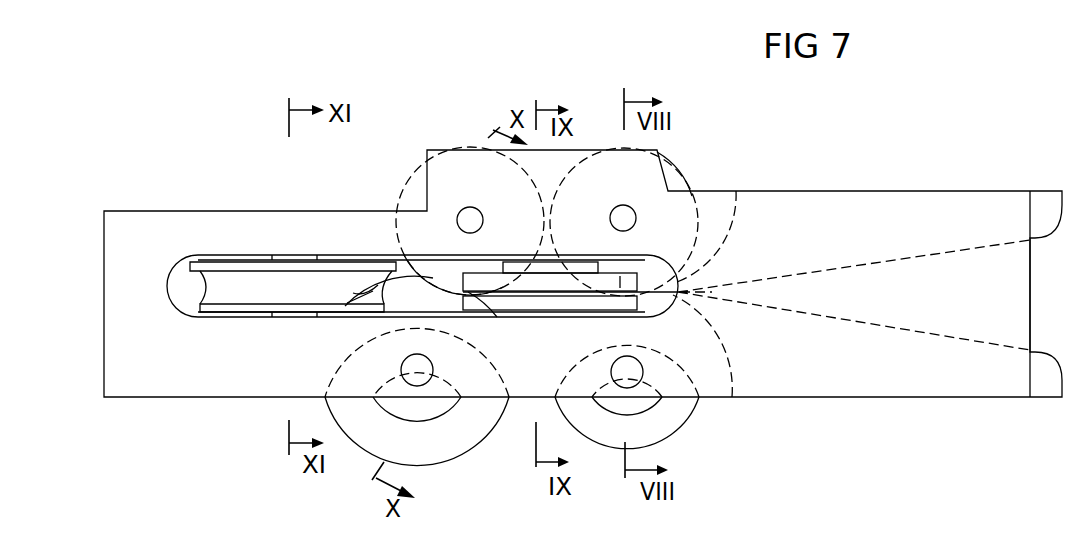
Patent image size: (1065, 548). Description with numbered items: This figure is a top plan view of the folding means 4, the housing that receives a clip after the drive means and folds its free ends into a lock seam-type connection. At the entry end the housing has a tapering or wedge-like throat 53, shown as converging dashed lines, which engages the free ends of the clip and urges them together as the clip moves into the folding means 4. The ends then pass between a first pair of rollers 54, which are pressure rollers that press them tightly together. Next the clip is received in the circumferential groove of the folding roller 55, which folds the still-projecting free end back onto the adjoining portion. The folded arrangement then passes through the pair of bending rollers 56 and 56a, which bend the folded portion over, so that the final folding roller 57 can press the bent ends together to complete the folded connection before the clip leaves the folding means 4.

The folding means 4 is at (298, 203).
The tapering or wedge-like throat 53 is at (867, 322).
The first pair of rollers 54 is at (687, 198).
The folding roller 55 is at (530, 301).
The bending roller 56 is at (398, 295).
The bending roller 56a is at (468, 170).
The final folding roller 57 is at (250, 297).